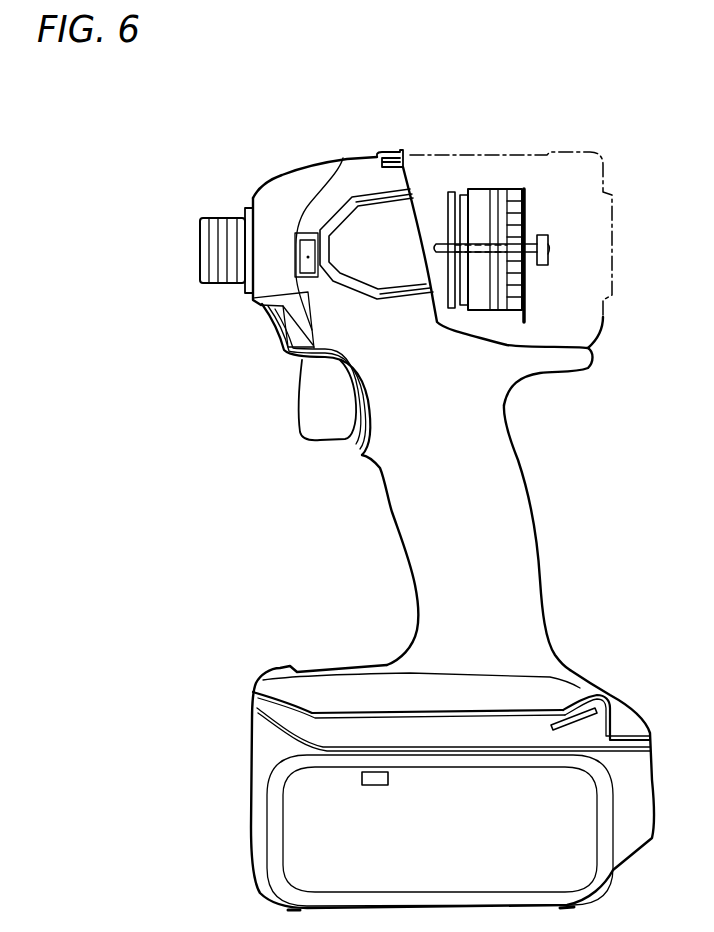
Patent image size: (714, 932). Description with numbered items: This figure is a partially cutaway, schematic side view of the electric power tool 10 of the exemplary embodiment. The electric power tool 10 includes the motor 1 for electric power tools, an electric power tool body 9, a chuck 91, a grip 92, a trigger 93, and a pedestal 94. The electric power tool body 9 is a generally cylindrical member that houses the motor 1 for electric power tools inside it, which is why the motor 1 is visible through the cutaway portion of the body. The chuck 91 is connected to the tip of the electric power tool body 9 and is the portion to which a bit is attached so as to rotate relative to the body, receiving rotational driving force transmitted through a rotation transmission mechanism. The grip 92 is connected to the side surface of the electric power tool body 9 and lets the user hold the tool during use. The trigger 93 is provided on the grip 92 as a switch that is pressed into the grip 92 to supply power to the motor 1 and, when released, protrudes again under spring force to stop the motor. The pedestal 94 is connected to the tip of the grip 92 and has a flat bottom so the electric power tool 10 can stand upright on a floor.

The electric power tool 10 is at (318, 102).
The electric power tool body 9 is at (358, 156).
The motor for electric power tools 1 is at (518, 213).
The chuck 91 is at (217, 277).
The grip 92 is at (522, 494).
The trigger 93 is at (325, 432).
The pedestal 94 is at (587, 692).